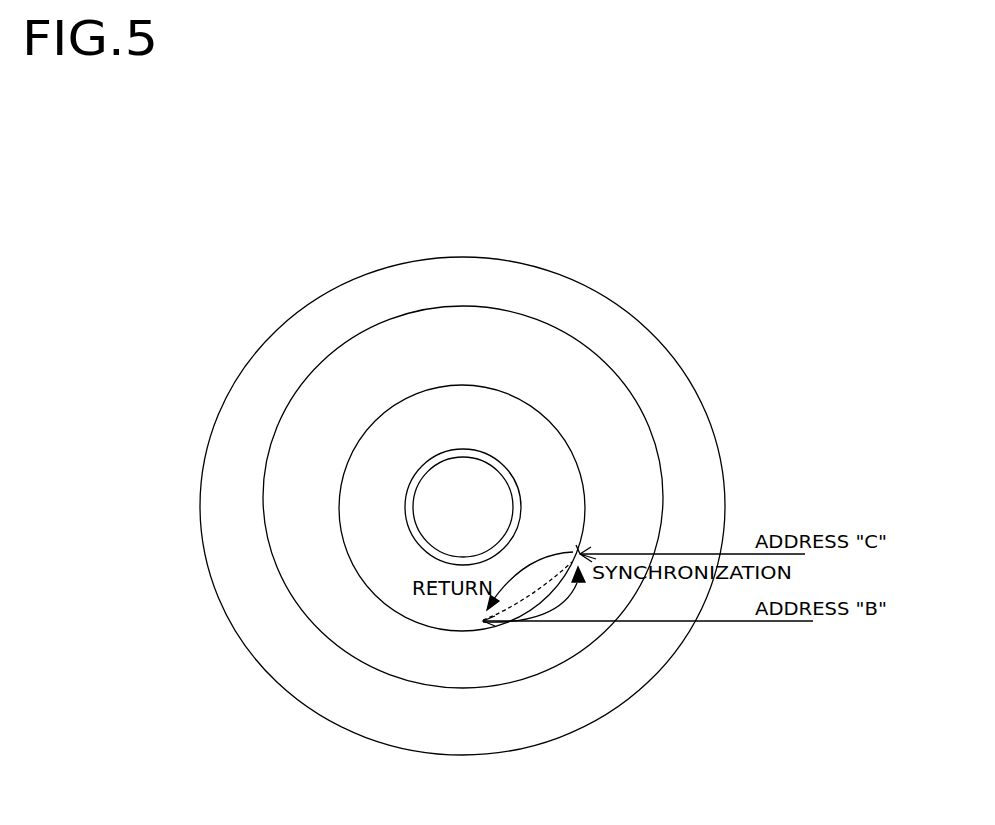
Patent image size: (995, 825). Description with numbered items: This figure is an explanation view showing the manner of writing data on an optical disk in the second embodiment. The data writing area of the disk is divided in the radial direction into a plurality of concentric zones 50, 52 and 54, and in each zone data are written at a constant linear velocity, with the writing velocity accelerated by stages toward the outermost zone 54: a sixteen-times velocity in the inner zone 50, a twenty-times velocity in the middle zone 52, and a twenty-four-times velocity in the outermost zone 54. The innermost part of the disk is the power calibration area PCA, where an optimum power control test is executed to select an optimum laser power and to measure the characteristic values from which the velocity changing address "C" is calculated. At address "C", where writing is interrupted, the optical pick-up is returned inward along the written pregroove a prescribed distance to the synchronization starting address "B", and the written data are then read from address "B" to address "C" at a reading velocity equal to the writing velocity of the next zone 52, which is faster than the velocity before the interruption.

The zone 50 is at (488, 430).
The zone 52 is at (608, 443).
The outermost zone 54 is at (688, 473).
The power calibration area PCA is at (433, 472).